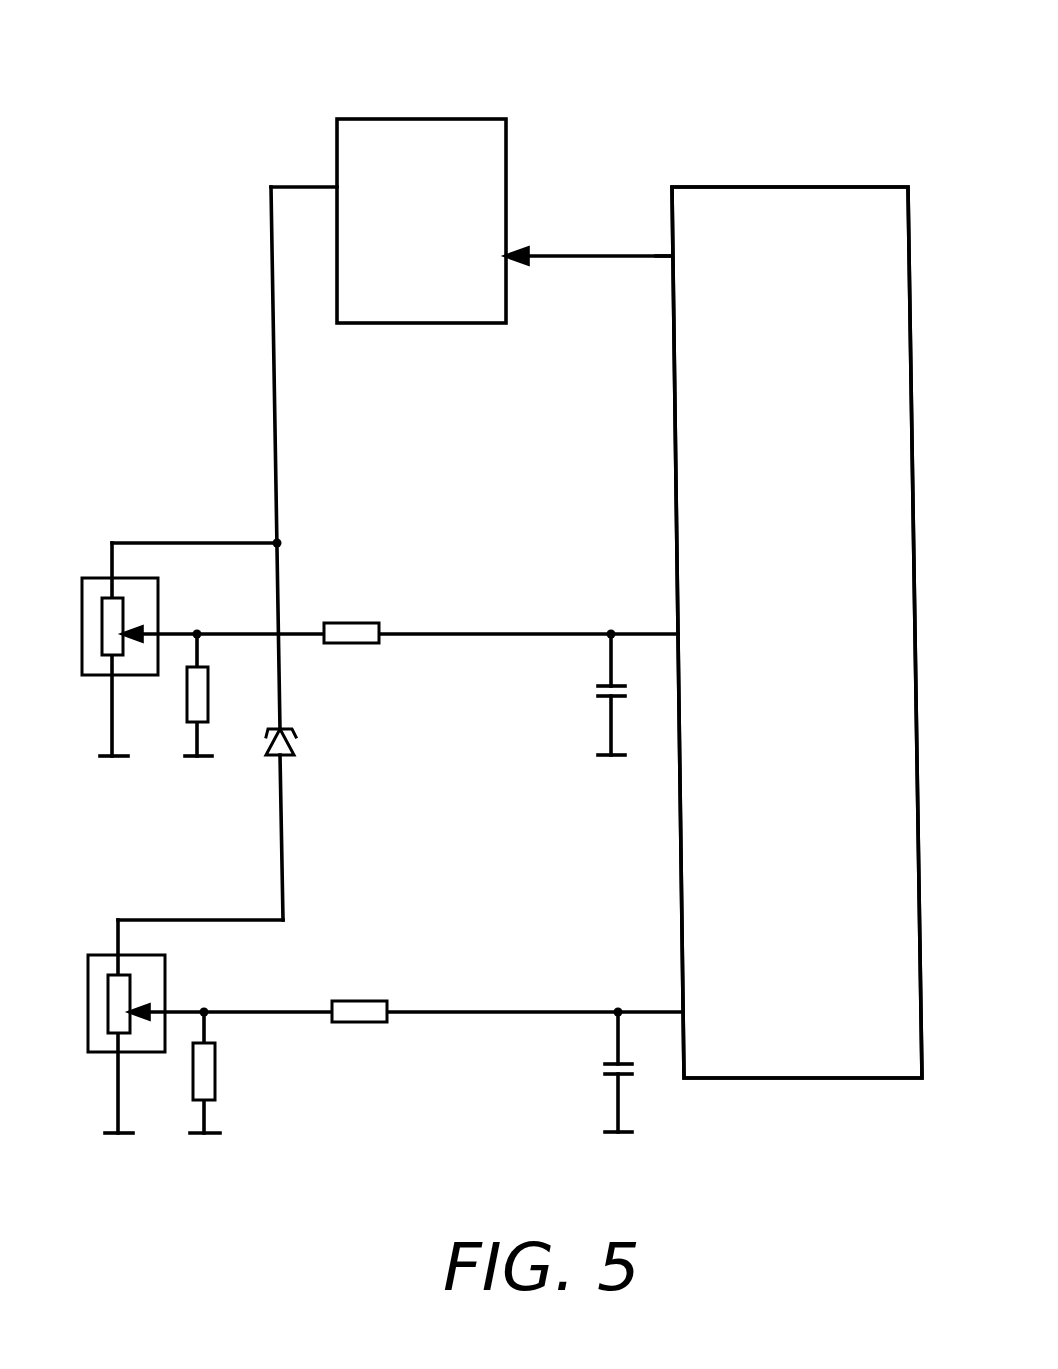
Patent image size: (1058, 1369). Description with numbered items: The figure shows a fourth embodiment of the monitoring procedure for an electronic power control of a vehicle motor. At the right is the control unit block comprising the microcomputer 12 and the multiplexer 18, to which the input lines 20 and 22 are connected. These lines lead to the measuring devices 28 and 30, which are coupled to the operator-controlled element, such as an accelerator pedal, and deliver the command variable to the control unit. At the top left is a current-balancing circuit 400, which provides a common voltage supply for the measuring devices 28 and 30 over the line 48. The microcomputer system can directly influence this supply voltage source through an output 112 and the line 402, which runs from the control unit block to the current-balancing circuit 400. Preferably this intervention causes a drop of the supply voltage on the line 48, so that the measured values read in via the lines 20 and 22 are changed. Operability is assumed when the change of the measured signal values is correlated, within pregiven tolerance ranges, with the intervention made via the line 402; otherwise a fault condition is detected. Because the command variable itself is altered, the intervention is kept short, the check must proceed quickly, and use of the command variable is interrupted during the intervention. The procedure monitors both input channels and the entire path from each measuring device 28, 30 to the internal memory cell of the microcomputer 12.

The current-balancing circuit 400 is at (406, 135).
The microcomputer 12 is at (820, 192).
The multiplexer 18 is at (797, 632).
The output 112 is at (672, 253).
The line 402 is at (582, 253).
The line 48 is at (275, 366).
The measuring device 30 is at (150, 595).
The line 22 is at (496, 630).
The measuring device 28 is at (103, 960).
The line 20 is at (505, 1008).